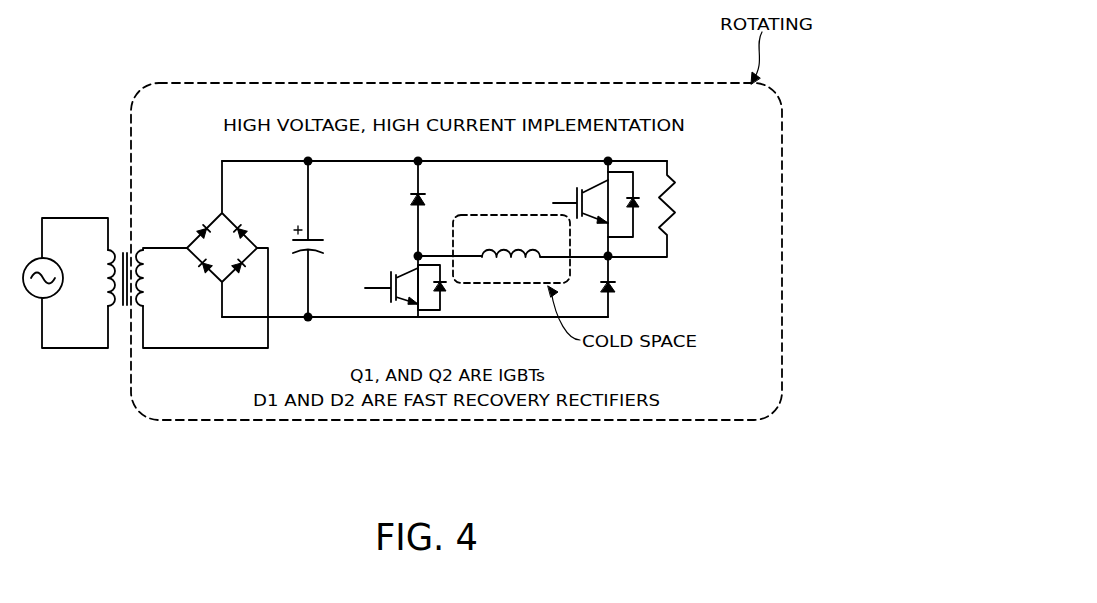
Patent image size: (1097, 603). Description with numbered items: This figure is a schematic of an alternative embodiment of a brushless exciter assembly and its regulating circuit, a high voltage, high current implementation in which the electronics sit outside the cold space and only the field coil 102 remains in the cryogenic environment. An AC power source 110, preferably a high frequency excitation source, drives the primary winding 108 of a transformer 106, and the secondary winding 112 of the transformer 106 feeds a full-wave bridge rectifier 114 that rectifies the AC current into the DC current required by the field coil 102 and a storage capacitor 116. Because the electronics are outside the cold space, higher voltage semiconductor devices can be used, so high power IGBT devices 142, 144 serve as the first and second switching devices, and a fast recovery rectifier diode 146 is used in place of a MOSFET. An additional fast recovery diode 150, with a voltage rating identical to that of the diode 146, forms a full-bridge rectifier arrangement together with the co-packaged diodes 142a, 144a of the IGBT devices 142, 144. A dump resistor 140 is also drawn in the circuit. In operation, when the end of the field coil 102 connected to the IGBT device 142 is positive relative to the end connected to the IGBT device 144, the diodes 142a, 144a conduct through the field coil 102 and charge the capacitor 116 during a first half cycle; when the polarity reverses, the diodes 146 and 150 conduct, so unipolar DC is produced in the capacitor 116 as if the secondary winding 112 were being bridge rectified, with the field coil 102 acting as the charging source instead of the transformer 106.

The field coil 102 is at (510, 261).
The transformer 106 is at (188, 263).
The primary winding 108 is at (66, 283).
The AC power source 110 is at (47, 267).
The secondary winding 112 is at (138, 277).
The full-wave bridge rectifier 114 is at (238, 228).
The storage capacitor 116 is at (316, 238).
The dump resistor 140 is at (678, 174).
The IGBT device 142 is at (440, 287).
The diode 142a is at (442, 304).
The IGBT device 144 is at (612, 239).
The diode 144a is at (637, 234).
The fast recovery rectifier diode 146 is at (421, 193).
The fast recovery diode 150 is at (614, 291).